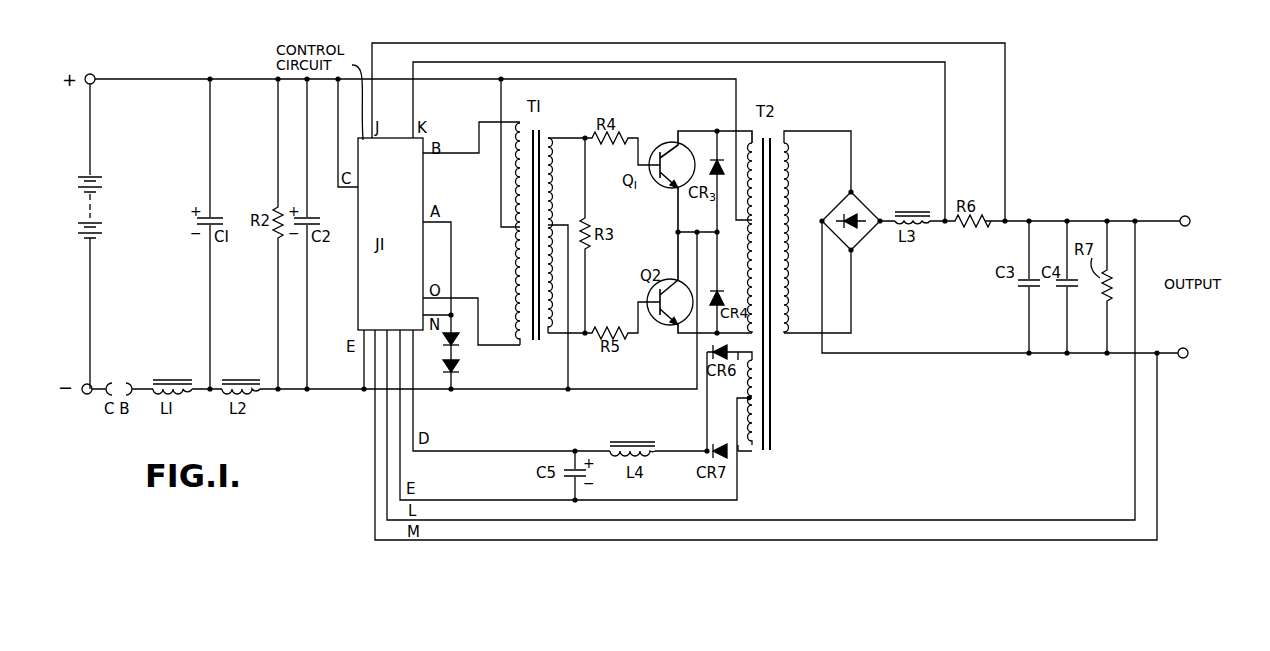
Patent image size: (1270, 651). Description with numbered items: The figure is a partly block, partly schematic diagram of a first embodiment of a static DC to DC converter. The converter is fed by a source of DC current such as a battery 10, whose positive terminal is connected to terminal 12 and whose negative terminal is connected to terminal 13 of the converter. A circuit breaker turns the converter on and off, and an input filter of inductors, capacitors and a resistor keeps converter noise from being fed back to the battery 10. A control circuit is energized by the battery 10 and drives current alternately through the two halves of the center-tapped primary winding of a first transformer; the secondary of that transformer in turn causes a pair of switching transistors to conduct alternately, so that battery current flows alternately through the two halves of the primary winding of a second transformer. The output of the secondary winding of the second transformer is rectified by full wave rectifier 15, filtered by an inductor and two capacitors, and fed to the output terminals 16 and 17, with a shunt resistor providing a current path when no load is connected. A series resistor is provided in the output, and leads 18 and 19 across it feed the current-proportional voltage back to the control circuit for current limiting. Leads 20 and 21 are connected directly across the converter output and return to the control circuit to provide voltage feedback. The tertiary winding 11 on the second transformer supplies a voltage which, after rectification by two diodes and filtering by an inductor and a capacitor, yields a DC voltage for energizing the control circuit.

The battery 10 is at (102, 211).
The tertiary winding 11 is at (756, 452).
The terminal 12 is at (94, 75).
The terminal 13 is at (86, 394).
The full wave rectifier 15 is at (870, 199).
The output terminal 16 is at (1192, 214).
The output terminal 17 is at (1181, 358).
The lead 18 is at (945, 140).
The lead 19 is at (1005, 140).
The lead 20 is at (1135, 439).
The lead 21 is at (1157, 439).